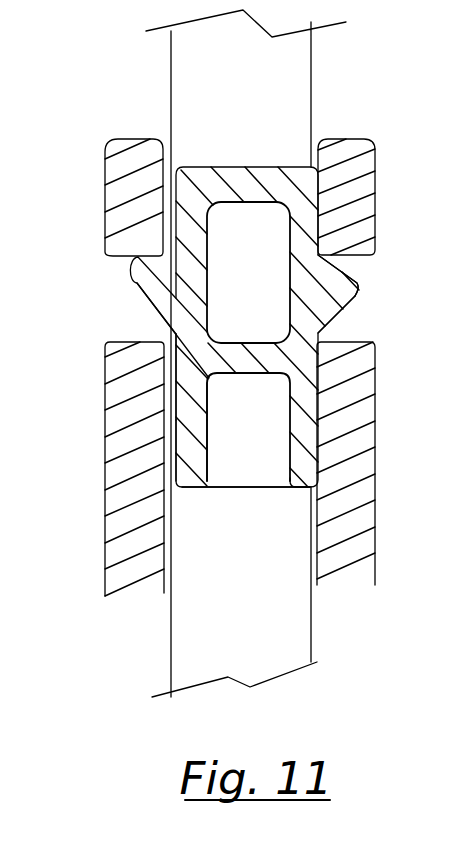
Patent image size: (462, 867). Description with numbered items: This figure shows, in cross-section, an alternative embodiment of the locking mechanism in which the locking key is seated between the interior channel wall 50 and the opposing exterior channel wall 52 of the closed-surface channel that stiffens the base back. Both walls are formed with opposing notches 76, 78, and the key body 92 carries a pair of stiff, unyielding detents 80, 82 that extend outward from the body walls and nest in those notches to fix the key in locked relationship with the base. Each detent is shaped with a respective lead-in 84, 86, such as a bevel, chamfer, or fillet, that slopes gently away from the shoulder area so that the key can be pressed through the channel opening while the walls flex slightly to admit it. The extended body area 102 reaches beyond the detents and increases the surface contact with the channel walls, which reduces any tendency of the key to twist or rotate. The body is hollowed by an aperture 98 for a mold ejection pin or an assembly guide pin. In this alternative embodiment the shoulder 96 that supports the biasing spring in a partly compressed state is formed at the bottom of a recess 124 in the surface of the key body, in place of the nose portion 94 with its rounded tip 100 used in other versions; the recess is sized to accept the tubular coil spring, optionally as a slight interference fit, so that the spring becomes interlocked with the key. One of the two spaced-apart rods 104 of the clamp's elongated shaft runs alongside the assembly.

The rod 104 is at (312, 56).
The extended body area 102 is at (282, 167).
The aperture 98 is at (231, 228).
The shoulder 96 is at (253, 377).
The recess 124 is at (241, 494).
The tip 100 is at (292, 490).
The detent 80 is at (131, 272).
The lead-in 84 is at (158, 291).
The body 92 is at (197, 351).
The nose portion 94 is at (178, 428).
The notch 76 is at (78, 265).
The notch 78 is at (395, 255).
The detent 82 is at (360, 278).
The lead-in 86 is at (328, 314).
The interior channel wall 50 is at (108, 478).
The exterior channel wall 52 is at (377, 468).